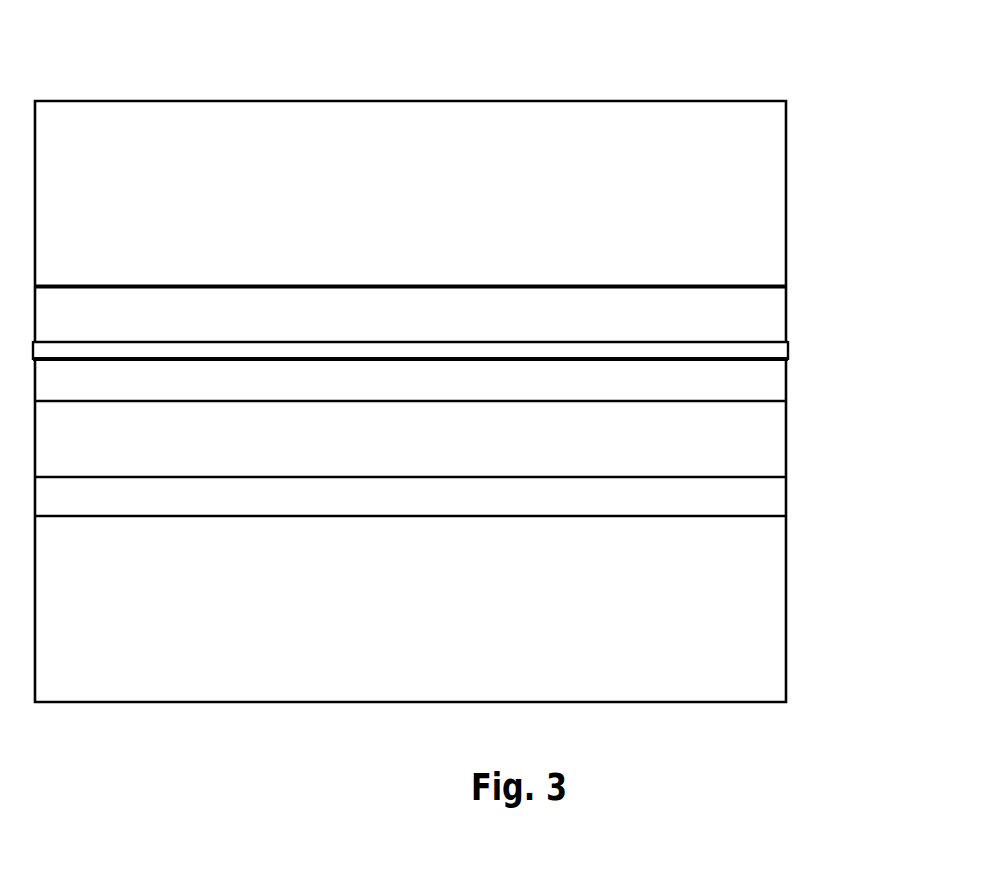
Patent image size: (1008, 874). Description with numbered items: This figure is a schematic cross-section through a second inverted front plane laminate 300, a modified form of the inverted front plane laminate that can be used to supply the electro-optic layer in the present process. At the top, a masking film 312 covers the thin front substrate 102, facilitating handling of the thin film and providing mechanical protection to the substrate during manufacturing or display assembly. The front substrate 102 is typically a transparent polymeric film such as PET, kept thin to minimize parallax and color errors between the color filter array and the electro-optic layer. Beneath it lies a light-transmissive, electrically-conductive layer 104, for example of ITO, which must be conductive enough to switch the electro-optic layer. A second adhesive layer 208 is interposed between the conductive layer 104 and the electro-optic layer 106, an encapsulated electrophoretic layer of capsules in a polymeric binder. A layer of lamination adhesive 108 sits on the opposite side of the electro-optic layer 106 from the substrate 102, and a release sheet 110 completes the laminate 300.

The second inverted front plane laminate 300 is at (508, 64).
The masking film 312 is at (720, 190).
The front substrate 102 is at (722, 318).
The light-transmissive, electrically-conductive layer 104 is at (722, 355).
The second adhesive layer 208 is at (720, 392).
The electro-optic layer 106 is at (721, 450).
The layer of lamination adhesive 108 is at (718, 501).
The release sheet 110 is at (718, 645).